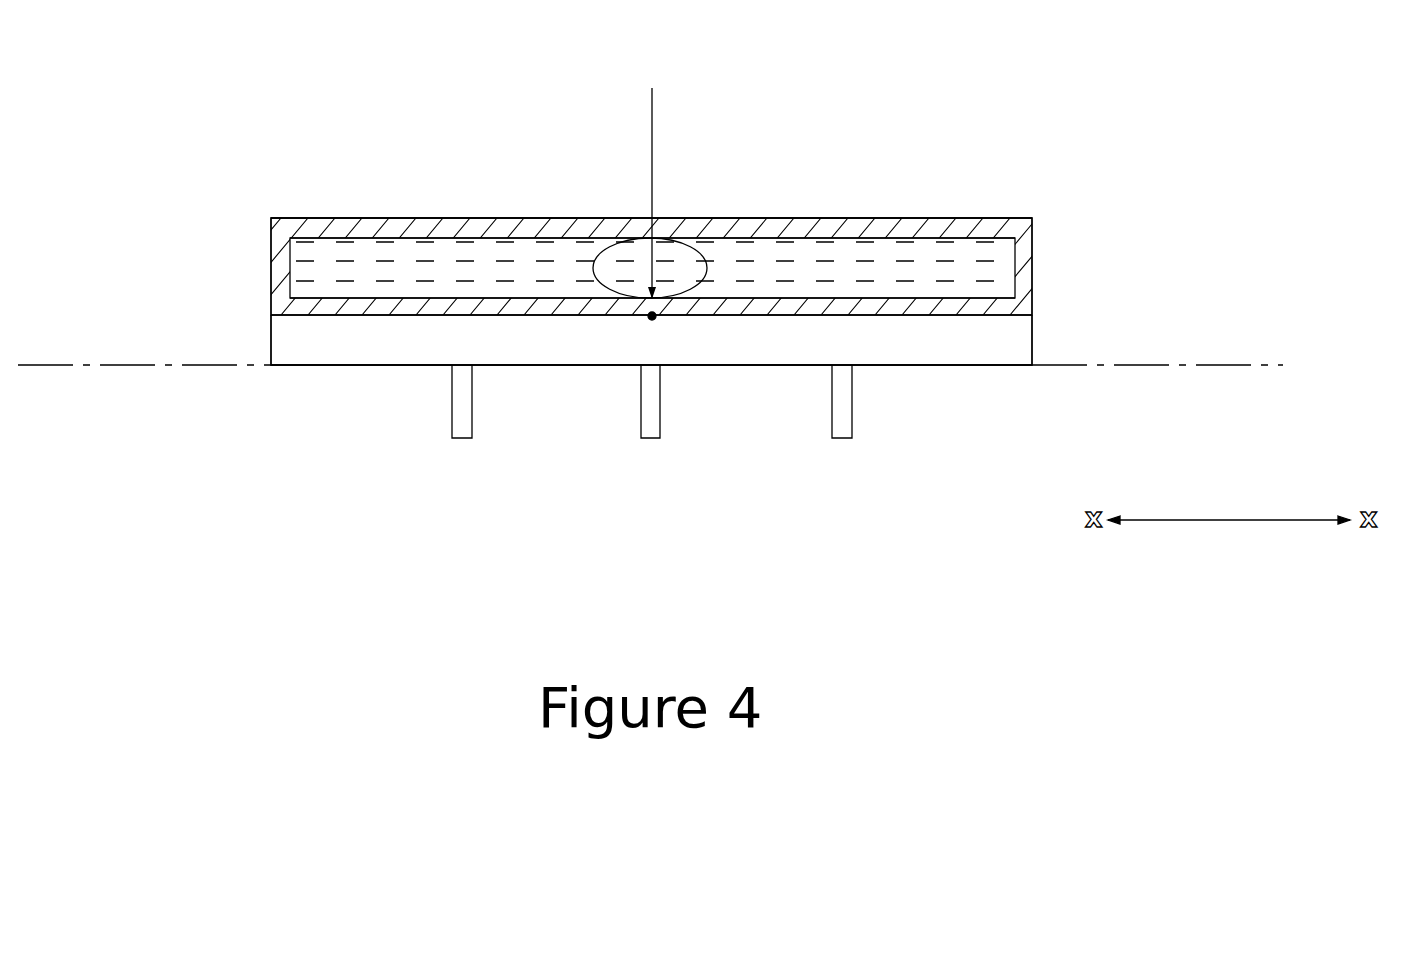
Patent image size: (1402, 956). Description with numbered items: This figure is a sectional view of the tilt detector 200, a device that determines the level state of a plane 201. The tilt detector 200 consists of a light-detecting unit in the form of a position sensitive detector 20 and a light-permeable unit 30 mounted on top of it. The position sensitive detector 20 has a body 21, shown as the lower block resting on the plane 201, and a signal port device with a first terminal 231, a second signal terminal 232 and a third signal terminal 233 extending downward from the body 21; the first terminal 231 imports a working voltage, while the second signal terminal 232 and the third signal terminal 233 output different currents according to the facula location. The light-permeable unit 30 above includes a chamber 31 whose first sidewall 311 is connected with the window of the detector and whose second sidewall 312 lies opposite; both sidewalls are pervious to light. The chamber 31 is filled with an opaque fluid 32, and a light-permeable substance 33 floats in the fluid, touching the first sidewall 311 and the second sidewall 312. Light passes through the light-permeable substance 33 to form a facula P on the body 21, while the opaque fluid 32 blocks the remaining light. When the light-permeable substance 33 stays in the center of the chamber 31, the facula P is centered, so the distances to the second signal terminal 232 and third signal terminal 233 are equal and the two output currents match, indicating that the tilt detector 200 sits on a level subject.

The tilt detector 200 is at (988, 130).
The position sensitive detector 20 is at (1035, 330).
The plane 201 is at (1175, 365).
The body 21 is at (965, 360).
The first terminal 231 is at (653, 428).
The second signal terminal 232 is at (460, 428).
The third signal terminal 233 is at (842, 428).
The light-permeable unit 30 is at (440, 218).
The chamber 31 is at (335, 225).
The first sidewall 311 is at (332, 302).
The second sidewall 312 is at (473, 225).
The opaque fluid 32 is at (312, 269).
The light-permeable substance 33 is at (630, 258).
The facula P is at (648, 317).